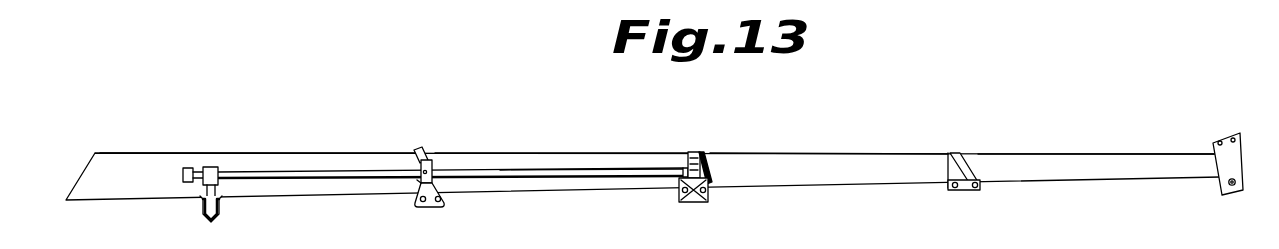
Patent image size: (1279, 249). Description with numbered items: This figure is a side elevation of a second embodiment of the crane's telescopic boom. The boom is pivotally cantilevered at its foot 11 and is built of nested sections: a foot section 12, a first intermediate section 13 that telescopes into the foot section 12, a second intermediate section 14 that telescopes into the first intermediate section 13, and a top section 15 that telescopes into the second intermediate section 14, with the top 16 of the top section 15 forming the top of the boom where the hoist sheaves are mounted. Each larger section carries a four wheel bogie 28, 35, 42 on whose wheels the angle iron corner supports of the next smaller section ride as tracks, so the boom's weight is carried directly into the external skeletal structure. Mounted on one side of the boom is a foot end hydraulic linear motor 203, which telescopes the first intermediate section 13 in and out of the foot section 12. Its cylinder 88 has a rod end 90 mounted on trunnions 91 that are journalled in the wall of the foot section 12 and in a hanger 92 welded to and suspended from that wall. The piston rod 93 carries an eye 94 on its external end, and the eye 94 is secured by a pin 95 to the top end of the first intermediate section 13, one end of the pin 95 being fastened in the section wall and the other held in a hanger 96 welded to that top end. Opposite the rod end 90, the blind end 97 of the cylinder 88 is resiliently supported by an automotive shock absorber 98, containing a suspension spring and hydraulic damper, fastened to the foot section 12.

The foot of the boom 11 is at (86, 164).
The foot section 12 is at (243, 151).
The first intermediate section 13 is at (574, 152).
The second intermediate section 14 is at (850, 153).
The top section 15 is at (1084, 167).
The top of the top section 16 is at (1243, 154).
The four wheel bogie 28 is at (447, 201).
The four wheel bogie 35 is at (710, 190).
The four wheel bogie 42 is at (980, 187).
The cylinder 88 is at (335, 170).
The rod end 90 is at (436, 170).
The trunnions 91 is at (418, 181).
The hanger 92 is at (433, 163).
The piston rod 93 is at (634, 168).
The eye 94 is at (686, 178).
The pin 95 is at (709, 171).
The hanger 96 is at (700, 154).
The blind end 97 is at (190, 167).
The automotive shock absorber 98 is at (222, 208).
The foot end hydraulic linear motor 203 is at (315, 182).